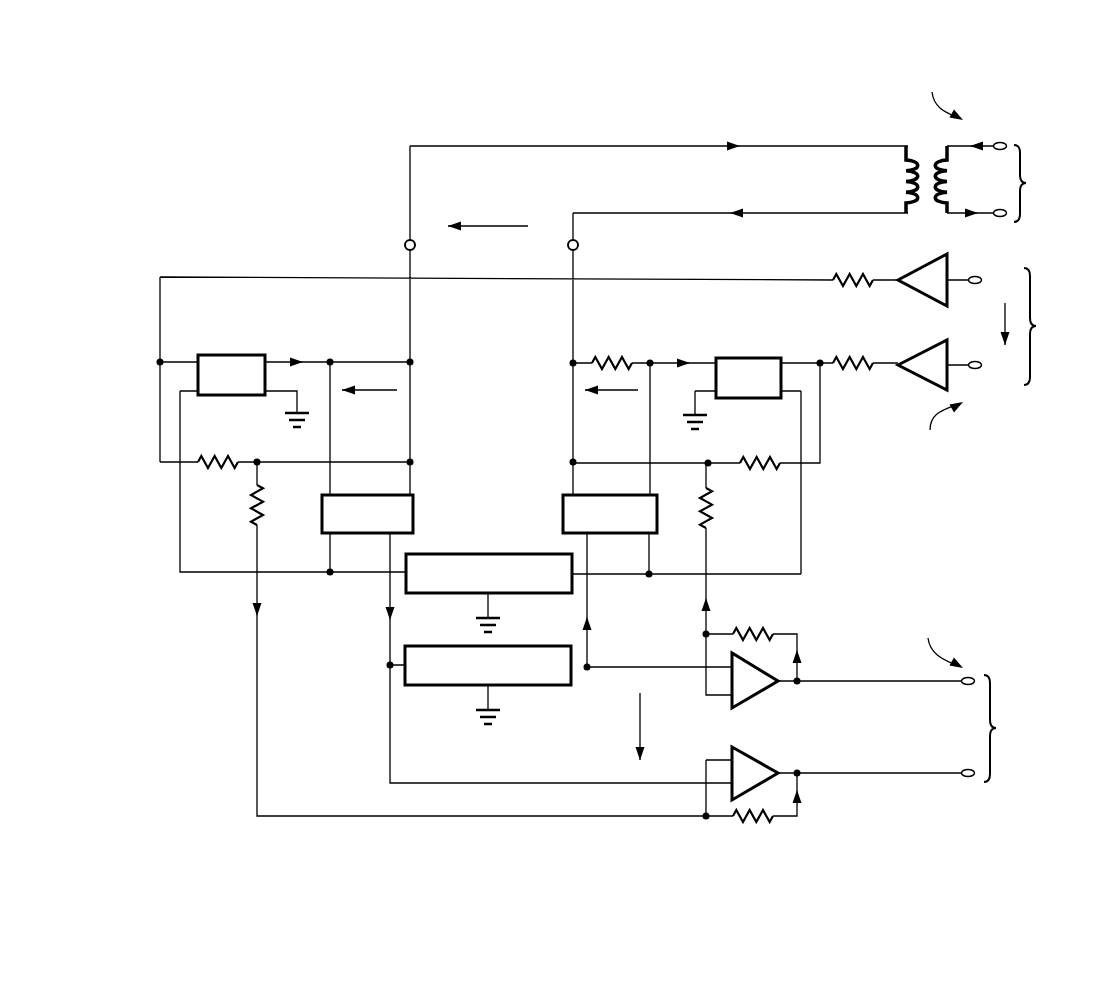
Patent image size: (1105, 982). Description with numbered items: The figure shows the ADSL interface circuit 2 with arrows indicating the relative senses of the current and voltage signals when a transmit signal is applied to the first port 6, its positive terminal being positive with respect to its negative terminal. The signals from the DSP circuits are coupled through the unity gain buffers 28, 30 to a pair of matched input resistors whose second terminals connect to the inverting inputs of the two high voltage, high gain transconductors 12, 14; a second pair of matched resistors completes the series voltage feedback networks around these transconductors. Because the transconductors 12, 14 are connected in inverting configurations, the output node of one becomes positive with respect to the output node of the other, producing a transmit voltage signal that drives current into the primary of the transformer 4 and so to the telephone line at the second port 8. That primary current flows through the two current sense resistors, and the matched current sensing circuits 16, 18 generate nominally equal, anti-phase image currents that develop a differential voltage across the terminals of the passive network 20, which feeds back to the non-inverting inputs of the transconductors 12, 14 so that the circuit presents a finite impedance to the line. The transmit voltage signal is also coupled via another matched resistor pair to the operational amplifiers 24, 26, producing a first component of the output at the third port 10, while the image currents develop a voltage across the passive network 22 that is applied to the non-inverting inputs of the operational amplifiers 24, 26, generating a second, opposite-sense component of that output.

The ADSL interface circuit 2 is at (397, 890).
The transformer 4 is at (928, 158).
The first port 6 is at (1002, 326).
The second port 8 is at (997, 182).
The third port 10 is at (995, 728).
The transconductor 12 is at (232, 355).
The transconductor 14 is at (748, 356).
The current sensing circuit 16 is at (415, 497).
The current sensing circuit 18 is at (567, 497).
The passive network 20 is at (488, 552).
The passive network 22 is at (554, 686).
The operational amplifier 24 is at (759, 755).
The operational amplifier 26 is at (760, 697).
The unity gain buffer 28 is at (923, 266).
The unity gain buffer 30 is at (923, 353).